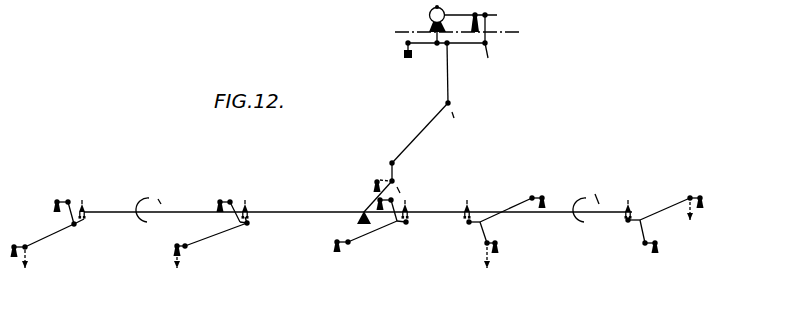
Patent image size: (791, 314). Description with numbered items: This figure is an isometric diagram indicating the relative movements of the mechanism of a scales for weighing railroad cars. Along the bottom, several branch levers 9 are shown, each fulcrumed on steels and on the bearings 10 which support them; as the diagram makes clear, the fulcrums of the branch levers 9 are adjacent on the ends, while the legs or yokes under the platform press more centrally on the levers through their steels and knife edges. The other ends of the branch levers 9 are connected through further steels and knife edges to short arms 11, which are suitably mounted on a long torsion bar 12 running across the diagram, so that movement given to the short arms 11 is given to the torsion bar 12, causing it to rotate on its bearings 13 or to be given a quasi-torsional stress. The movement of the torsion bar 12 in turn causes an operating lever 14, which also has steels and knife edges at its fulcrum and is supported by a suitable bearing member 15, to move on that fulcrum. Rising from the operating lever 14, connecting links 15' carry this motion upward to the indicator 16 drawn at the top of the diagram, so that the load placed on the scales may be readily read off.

The branch lever 9 is at (55, 239).
The bearing 10 is at (522, 249).
The short arm 11 is at (250, 207).
The torsion bar 12 is at (107, 210).
The bearing 13 is at (257, 217).
The operating lever 14 is at (398, 180).
The bearing member 15 is at (361, 206).
The connecting link 15' is at (418, 135).
The indicator 16 is at (421, 14).